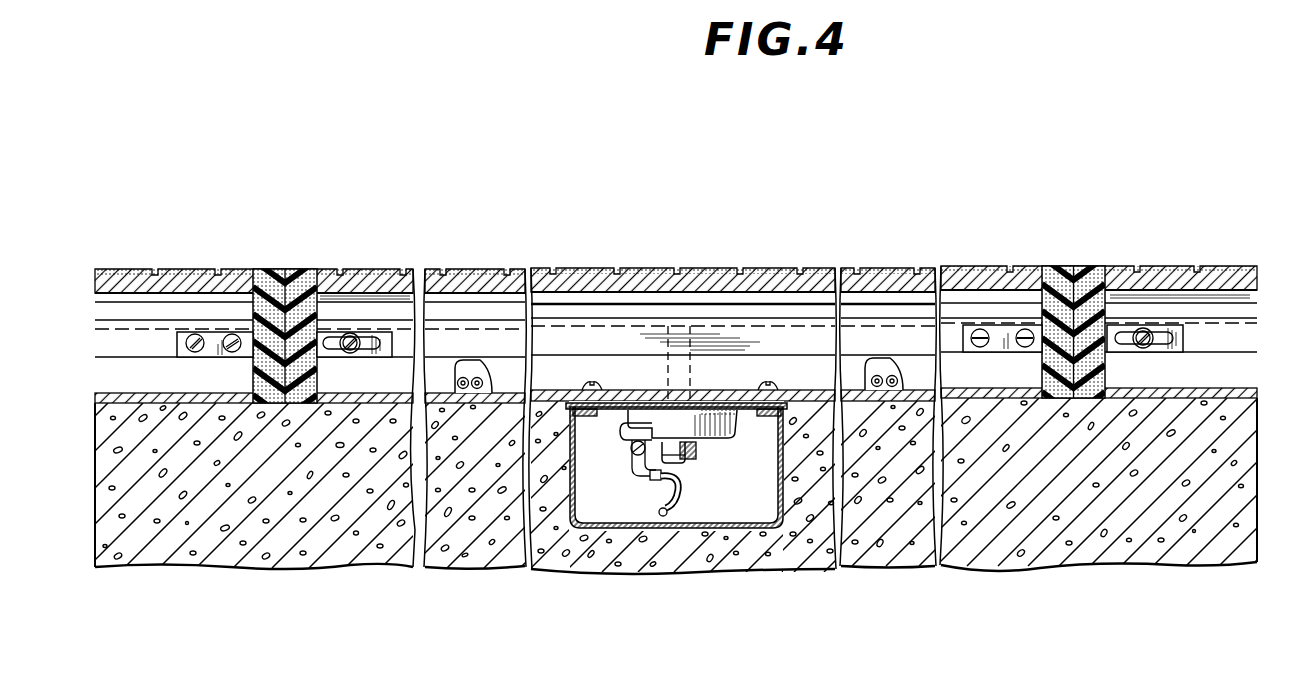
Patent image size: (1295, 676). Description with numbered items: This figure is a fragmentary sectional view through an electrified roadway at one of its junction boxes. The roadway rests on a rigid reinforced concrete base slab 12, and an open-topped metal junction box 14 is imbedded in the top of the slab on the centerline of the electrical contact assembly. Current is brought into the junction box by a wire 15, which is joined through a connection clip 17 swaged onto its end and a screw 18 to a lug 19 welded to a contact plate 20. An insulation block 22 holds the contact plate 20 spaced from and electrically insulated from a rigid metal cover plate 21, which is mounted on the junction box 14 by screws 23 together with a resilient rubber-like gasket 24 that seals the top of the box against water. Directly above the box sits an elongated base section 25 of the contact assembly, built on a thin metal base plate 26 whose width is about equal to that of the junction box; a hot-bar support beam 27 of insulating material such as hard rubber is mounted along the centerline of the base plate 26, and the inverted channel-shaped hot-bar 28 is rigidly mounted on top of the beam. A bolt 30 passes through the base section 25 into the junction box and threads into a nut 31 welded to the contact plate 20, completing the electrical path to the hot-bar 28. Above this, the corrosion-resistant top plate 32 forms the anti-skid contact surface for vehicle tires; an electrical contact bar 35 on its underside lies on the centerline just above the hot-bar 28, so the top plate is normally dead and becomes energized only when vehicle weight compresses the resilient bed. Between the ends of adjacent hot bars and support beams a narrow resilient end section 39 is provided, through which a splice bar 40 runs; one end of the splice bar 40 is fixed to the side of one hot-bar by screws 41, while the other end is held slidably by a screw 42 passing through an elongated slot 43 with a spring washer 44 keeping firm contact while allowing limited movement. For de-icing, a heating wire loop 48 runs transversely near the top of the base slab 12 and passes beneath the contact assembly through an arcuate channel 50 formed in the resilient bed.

The base slab 12 is at (252, 484).
The junction box 14 is at (762, 530).
The wire 15 is at (660, 502).
The connection clip 17 is at (637, 470).
The screw 18 is at (632, 449).
The lug 19 is at (626, 428).
The contact plate 20 is at (700, 448).
The cover plate 21 is at (568, 407).
The insulation block 22 is at (730, 410).
The screws 23 is at (594, 385).
The gasket 24 is at (760, 408).
The base section 25 is at (641, 318).
The base plate 26 is at (697, 394).
The hot-bar support beam 27 is at (109, 393).
The hot-bar 28 is at (583, 348).
The bolt 30 is at (675, 465).
The nut 31 is at (698, 447).
The top plate 32 is at (993, 266).
The electrical contact bar 35 is at (585, 298).
The end section 39 is at (297, 283).
The splice bar 40 is at (177, 345).
The screws 41 is at (232, 334).
The screw 42 is at (352, 335).
The elongated slot 43 is at (373, 334).
The spring washer 44 is at (343, 331).
The heating wire loop 48 is at (470, 372).
The arcuate channel 50 is at (470, 360).